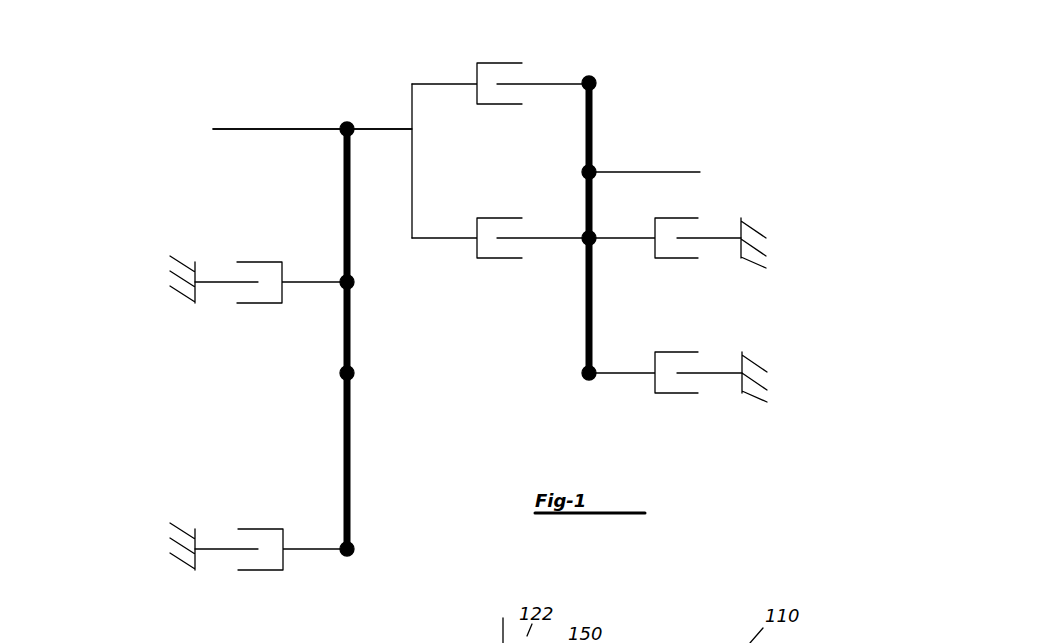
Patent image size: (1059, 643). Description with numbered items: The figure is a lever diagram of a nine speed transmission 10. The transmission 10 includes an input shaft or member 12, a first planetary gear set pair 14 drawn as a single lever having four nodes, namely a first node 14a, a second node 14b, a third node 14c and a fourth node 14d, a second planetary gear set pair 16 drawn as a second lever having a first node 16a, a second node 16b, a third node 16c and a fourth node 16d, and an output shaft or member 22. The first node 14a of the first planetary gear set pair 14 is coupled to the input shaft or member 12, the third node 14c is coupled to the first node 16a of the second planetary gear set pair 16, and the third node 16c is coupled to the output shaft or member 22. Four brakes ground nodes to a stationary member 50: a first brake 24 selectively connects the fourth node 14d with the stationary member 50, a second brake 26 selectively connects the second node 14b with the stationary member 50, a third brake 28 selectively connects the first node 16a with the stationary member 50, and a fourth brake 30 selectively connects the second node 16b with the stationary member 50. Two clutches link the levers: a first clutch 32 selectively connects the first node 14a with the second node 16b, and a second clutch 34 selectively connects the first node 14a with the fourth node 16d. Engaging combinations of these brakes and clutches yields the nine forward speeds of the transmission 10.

The transmission 10 is at (664, 426).
The input shaft or member 12 is at (236, 127).
The first planetary gear set pair 14 is at (328, 582).
The first node 14a is at (347, 121).
The second node 14b is at (355, 283).
The third node 14c is at (340, 373).
The fourth node 14d is at (355, 548).
The second planetary gear set pair 16 is at (634, 74).
The first node 16a is at (589, 383).
The second node 16b is at (595, 243).
The third node 16c is at (582, 172).
The fourth node 16d is at (589, 74).
The output shaft or member 22 is at (652, 170).
The first brake 24 is at (262, 529).
The second brake 26 is at (262, 262).
The third brake 28 is at (680, 352).
The fourth brake 30 is at (680, 218).
The first clutch 32 is at (497, 260).
The second clutch 34 is at (497, 105).
The stationary member 50 is at (185, 300).